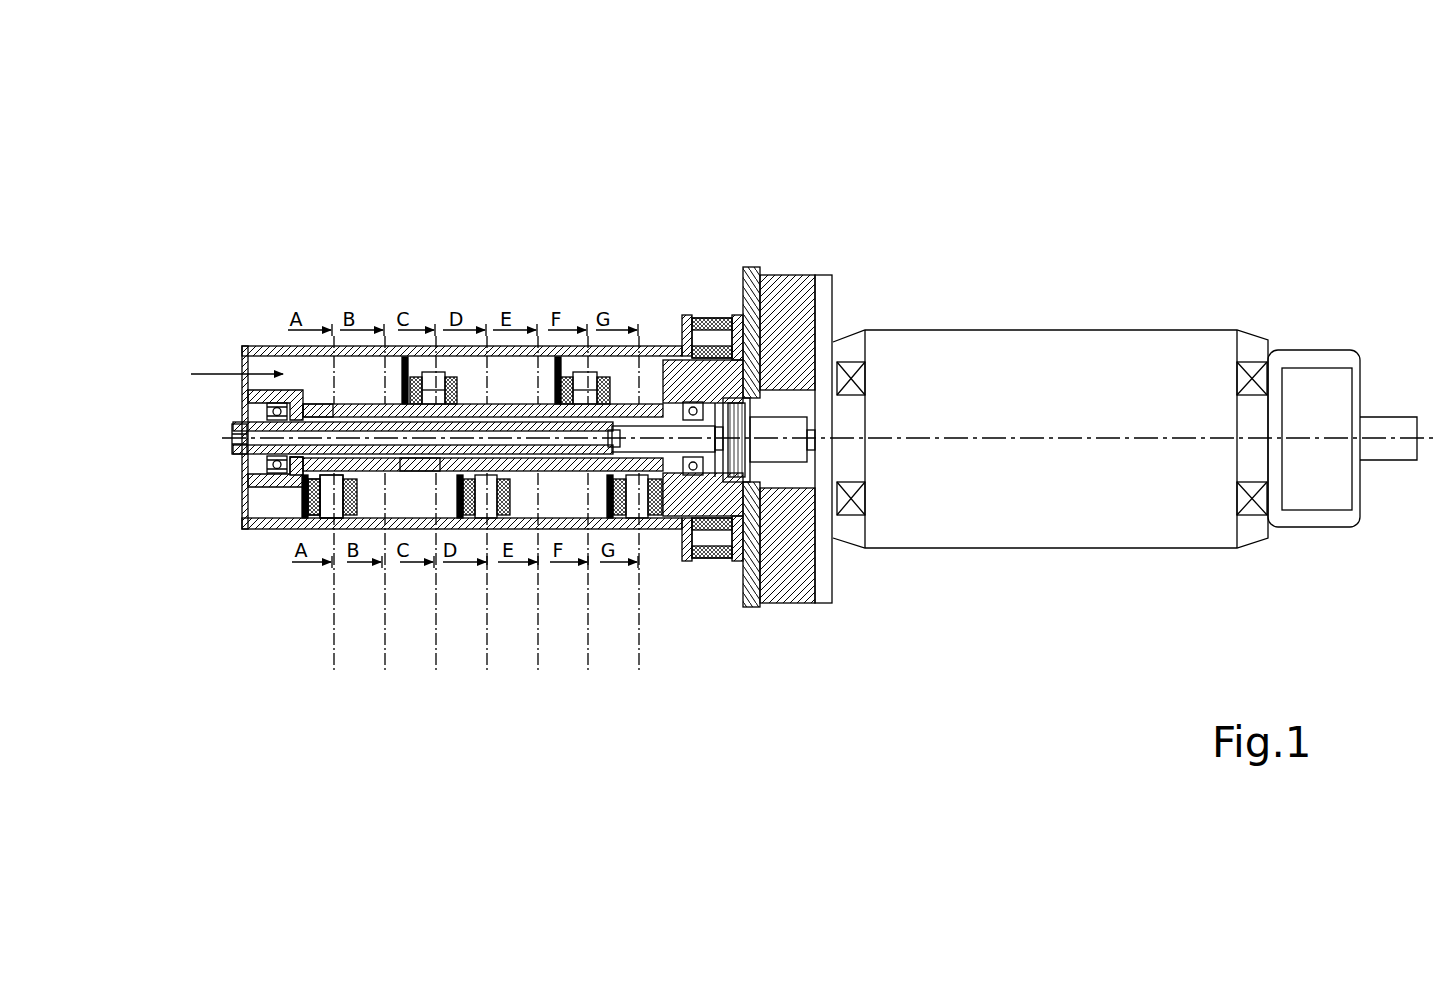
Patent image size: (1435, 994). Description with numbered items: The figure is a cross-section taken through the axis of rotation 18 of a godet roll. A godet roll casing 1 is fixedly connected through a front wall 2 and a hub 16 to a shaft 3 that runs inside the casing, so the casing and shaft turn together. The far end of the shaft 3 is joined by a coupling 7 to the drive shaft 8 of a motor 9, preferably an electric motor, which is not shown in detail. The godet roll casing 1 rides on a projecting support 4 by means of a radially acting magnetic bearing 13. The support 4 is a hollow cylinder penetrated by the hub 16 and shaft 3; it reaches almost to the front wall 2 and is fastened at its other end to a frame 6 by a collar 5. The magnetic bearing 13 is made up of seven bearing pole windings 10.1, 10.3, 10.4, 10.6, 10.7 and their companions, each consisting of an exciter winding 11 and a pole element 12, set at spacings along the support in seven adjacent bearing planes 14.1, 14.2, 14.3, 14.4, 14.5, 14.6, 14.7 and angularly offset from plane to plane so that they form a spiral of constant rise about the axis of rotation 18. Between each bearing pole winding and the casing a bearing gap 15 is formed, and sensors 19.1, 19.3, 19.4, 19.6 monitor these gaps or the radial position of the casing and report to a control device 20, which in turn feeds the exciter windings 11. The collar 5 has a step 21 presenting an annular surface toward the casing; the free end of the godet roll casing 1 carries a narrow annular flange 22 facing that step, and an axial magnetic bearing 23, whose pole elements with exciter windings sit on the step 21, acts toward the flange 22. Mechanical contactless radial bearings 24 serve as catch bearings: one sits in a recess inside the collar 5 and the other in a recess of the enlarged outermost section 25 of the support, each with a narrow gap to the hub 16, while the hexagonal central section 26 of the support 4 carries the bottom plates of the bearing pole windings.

The godet roll casing 1 is at (257, 352).
The front wall 2 is at (243, 360).
The shaft 3 is at (657, 430).
The support 4 is at (342, 417).
The collar 5 is at (690, 380).
The frame 6 is at (762, 322).
The coupling 7 is at (748, 400).
The drive shaft 8 is at (813, 403).
The motor 9 is at (930, 353).
The bearing pole winding 10.1 is at (366, 503).
The bearing pole winding 10.3 is at (435, 370).
The bearing pole winding 10.4 is at (518, 496).
The bearing pole winding 10.6 is at (582, 370).
The bearing pole winding 10.7 is at (600, 501).
The exciter winding 11 is at (300, 513).
The pole element 12 is at (337, 518).
The magnetic bearing 13 is at (191, 374).
The bearing plane 14.1 is at (334, 673).
The bearing plane 14.2 is at (385, 673).
The bearing plane 14.3 is at (436, 673).
The bearing plane 14.4 is at (487, 673).
The bearing plane 14.5 is at (538, 673).
The bearing plane 14.6 is at (588, 673).
The bearing plane 14.7 is at (639, 673).
The bearing gap 15 is at (315, 518).
The hub 16 is at (313, 420).
The axis of rotation 18 is at (987, 440).
The sensor 19.1 is at (304, 500).
The sensor 19.3 is at (403, 373).
The sensor 19.4 is at (461, 520).
The sensor 19.6 is at (556, 370).
The control device 20 is at (1322, 493).
The step 21 is at (729, 562).
The annular flange 22 is at (684, 562).
The axial magnetic bearing 23 is at (712, 562).
The radial bearing 24 is at (271, 468).
The outermost section 25 is at (266, 484).
The central section 26 is at (423, 472).